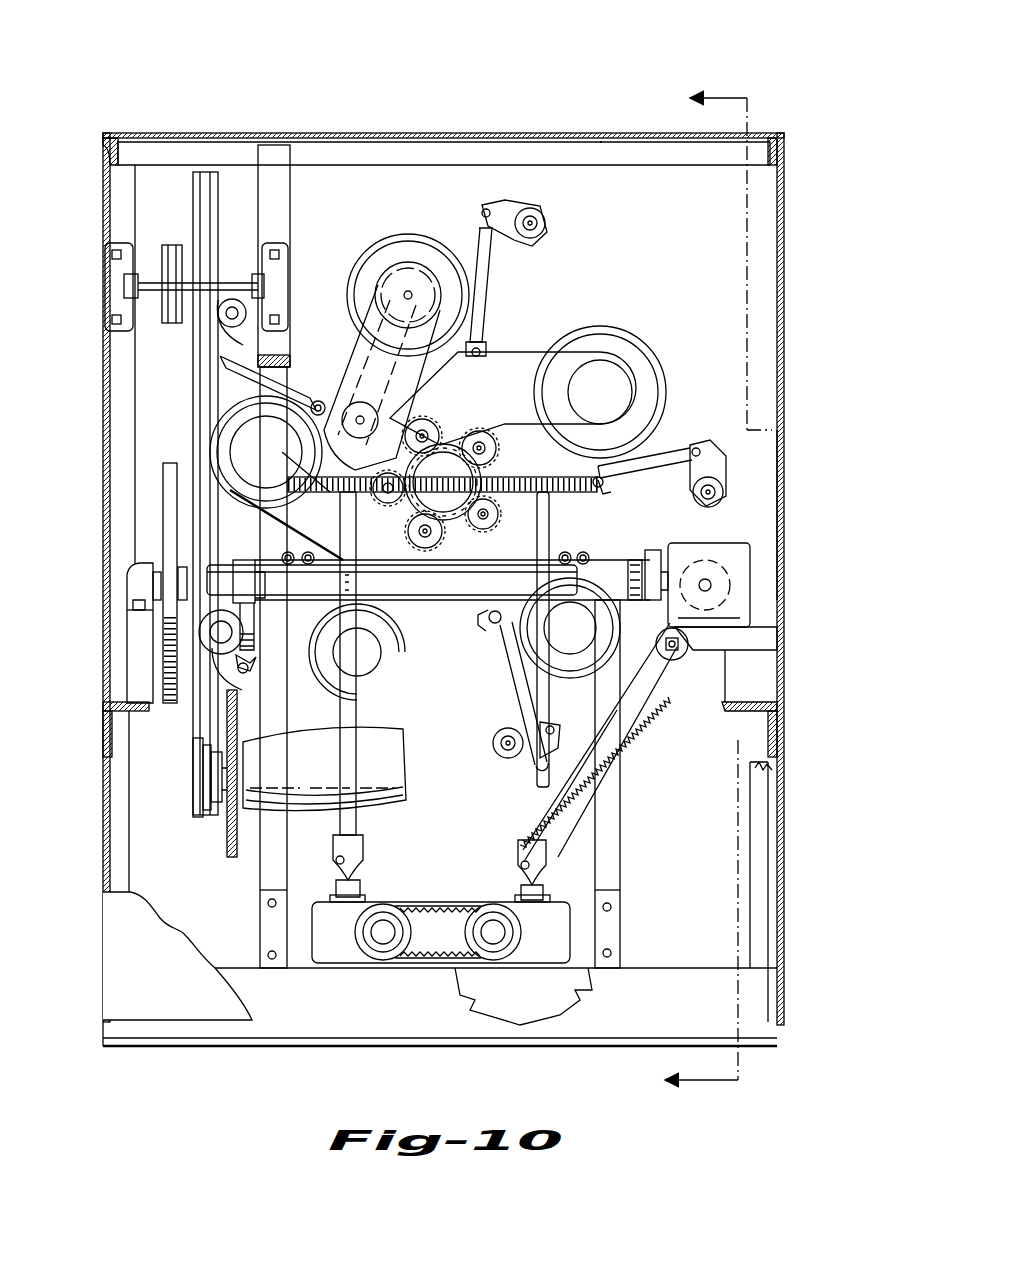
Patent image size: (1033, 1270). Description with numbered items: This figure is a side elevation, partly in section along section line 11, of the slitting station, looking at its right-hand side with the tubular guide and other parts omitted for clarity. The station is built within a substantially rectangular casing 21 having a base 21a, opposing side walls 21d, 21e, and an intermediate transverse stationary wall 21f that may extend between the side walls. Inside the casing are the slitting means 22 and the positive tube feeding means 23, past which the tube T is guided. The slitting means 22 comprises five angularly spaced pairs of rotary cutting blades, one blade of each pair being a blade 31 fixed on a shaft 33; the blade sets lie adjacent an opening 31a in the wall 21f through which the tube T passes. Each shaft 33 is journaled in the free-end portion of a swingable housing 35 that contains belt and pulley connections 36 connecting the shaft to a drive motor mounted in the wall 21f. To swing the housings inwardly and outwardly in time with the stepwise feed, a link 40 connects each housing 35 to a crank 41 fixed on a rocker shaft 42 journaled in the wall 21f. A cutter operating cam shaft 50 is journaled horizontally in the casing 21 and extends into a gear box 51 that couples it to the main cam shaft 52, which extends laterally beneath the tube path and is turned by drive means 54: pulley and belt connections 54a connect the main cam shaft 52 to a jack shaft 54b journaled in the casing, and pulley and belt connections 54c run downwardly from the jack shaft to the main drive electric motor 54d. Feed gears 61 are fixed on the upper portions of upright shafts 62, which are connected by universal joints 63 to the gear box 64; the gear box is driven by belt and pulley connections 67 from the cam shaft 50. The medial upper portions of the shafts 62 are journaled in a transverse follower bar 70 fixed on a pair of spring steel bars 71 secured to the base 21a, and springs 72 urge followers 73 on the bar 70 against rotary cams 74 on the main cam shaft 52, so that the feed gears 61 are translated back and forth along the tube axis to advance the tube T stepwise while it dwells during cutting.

The section line 11- 11 is at (688, 595).
The casing 21 is at (786, 296).
The base 21a is at (649, 968).
The side wall 21d is at (111, 656).
The side wall 21e is at (778, 398).
The intermediate transverse stationary wall 21f is at (715, 230).
The slitting means 22 is at (520, 343).
The positive tube feeding means 23 is at (602, 487).
The rotary cutting blade 31 is at (442, 396).
The opening 31a is at (373, 530).
The shaft 33 is at (500, 430).
The swingable housing 35 is at (588, 633).
The belt and pulley connections 36 is at (342, 345).
The link 40 is at (479, 272).
The crank 41 is at (514, 204).
The rocker shaft 42 is at (536, 220).
The cutter operating cam shaft 50 is at (710, 585).
The gear box 51 is at (733, 626).
The main cam shaft 52 is at (401, 592).
The drive means 54 is at (172, 416).
The pulley and belt connections 54a is at (175, 332).
The jack shaft 54b is at (243, 288).
The pulley and belt connections 54c is at (216, 726).
The main drive electric motor 54d is at (335, 773).
The feed gear 61 is at (325, 496).
The upright shaft 62 is at (346, 532).
The universal joint 63 is at (356, 858).
The gear box 64 is at (337, 952).
The belt and pulley connections 67 is at (528, 810).
The transverse follower bar 70 is at (406, 592).
The spring steel bar 71 is at (260, 876).
The spring 72 is at (288, 554).
The follower 73 is at (650, 550).
The rotary cam 74 is at (244, 554).
The tube T is at (497, 478).